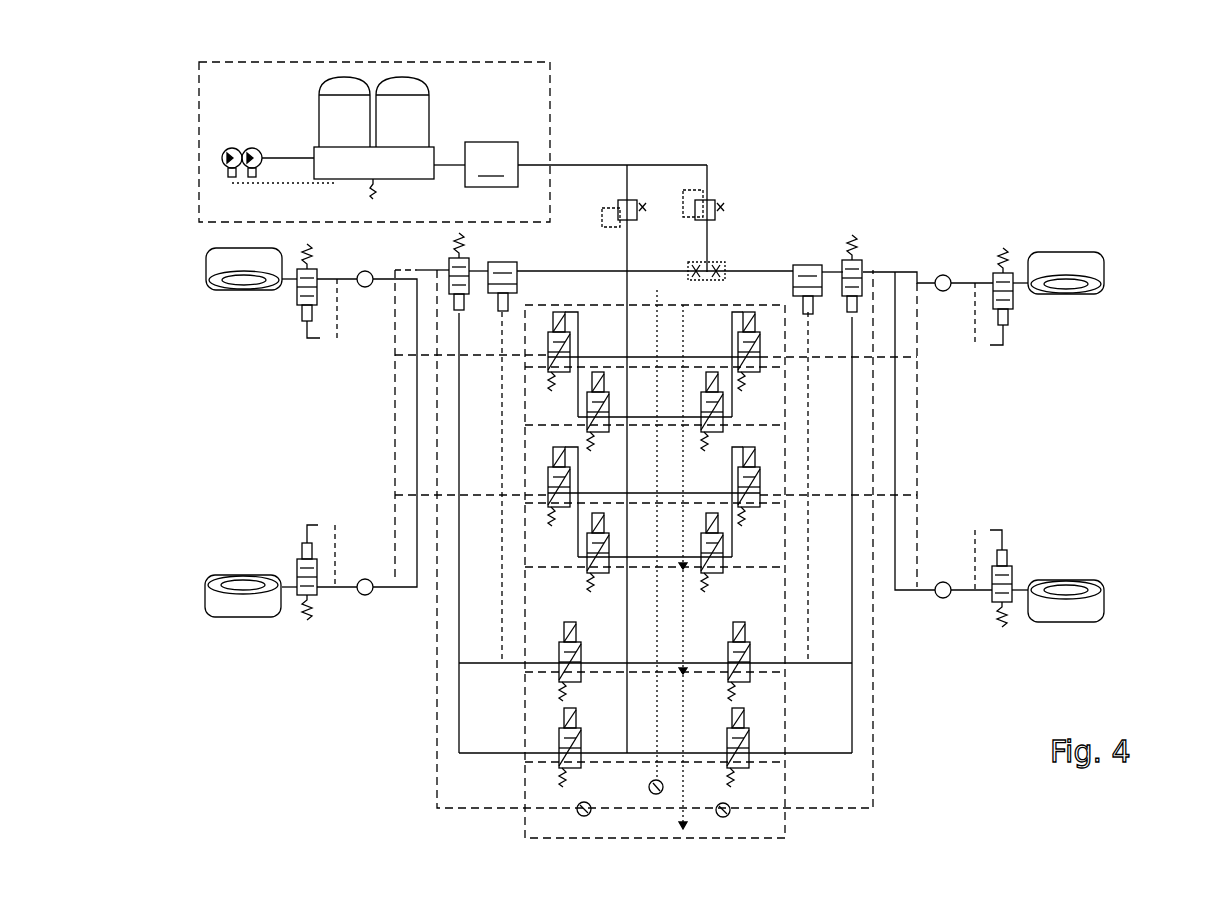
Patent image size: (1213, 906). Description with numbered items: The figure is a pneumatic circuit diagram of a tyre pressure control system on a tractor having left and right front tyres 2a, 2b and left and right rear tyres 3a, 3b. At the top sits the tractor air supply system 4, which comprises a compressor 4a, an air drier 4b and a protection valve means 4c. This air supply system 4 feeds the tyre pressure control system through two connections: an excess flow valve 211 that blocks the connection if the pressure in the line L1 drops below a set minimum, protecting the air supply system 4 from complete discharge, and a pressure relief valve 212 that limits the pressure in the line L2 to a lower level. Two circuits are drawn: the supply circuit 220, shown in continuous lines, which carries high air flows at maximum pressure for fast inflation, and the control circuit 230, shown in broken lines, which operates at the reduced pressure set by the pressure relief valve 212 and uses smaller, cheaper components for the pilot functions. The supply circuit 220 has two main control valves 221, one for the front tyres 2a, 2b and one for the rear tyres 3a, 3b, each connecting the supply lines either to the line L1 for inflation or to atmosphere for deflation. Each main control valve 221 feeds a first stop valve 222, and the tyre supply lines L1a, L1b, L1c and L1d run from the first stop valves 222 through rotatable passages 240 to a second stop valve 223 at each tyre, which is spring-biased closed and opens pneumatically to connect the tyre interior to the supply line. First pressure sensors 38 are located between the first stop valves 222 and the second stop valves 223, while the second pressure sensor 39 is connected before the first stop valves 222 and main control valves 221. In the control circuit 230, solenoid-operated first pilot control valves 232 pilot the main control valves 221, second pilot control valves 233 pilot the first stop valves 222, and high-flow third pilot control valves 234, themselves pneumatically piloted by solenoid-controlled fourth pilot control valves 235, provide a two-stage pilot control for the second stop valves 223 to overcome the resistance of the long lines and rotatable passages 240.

The tractor air supply system 4 is at (553, 97).
The compressor 4a is at (246, 148).
The air drier 4b is at (410, 118).
The protection valve means 4c is at (476, 164).
The left front tyre 2a is at (205, 592).
The right front tyre 2b is at (205, 270).
The left rear tyre 3a is at (1073, 252).
The right rear tyre 3b is at (1103, 600).
The first pressure sensor 38 is at (586, 817).
The second pressure sensor 39 is at (654, 795).
The excess flow valve 211 is at (709, 198).
The pressure relief valve 212 is at (627, 198).
The supply circuit 220 is at (557, 267).
The main control valve 221 is at (500, 273).
The first stop valve 222 is at (448, 262).
The second stop valve 223 is at (298, 307).
The control circuit 230 is at (655, 290).
The first pilot control valve 232 is at (573, 640).
The second pilot control valve 233 is at (575, 732).
The third pilot control valve 234 is at (548, 363).
The fourth pilot control valve 235 is at (588, 425).
The rotatable passage 240 is at (363, 287).
The supply line L1 is at (709, 246).
The control line L2 is at (629, 247).
The tyre supply line L1a is at (333, 587).
The tyre supply line L1b is at (327, 270).
The tyre supply line L1c is at (967, 592).
The tyre supply line L1d is at (965, 283).